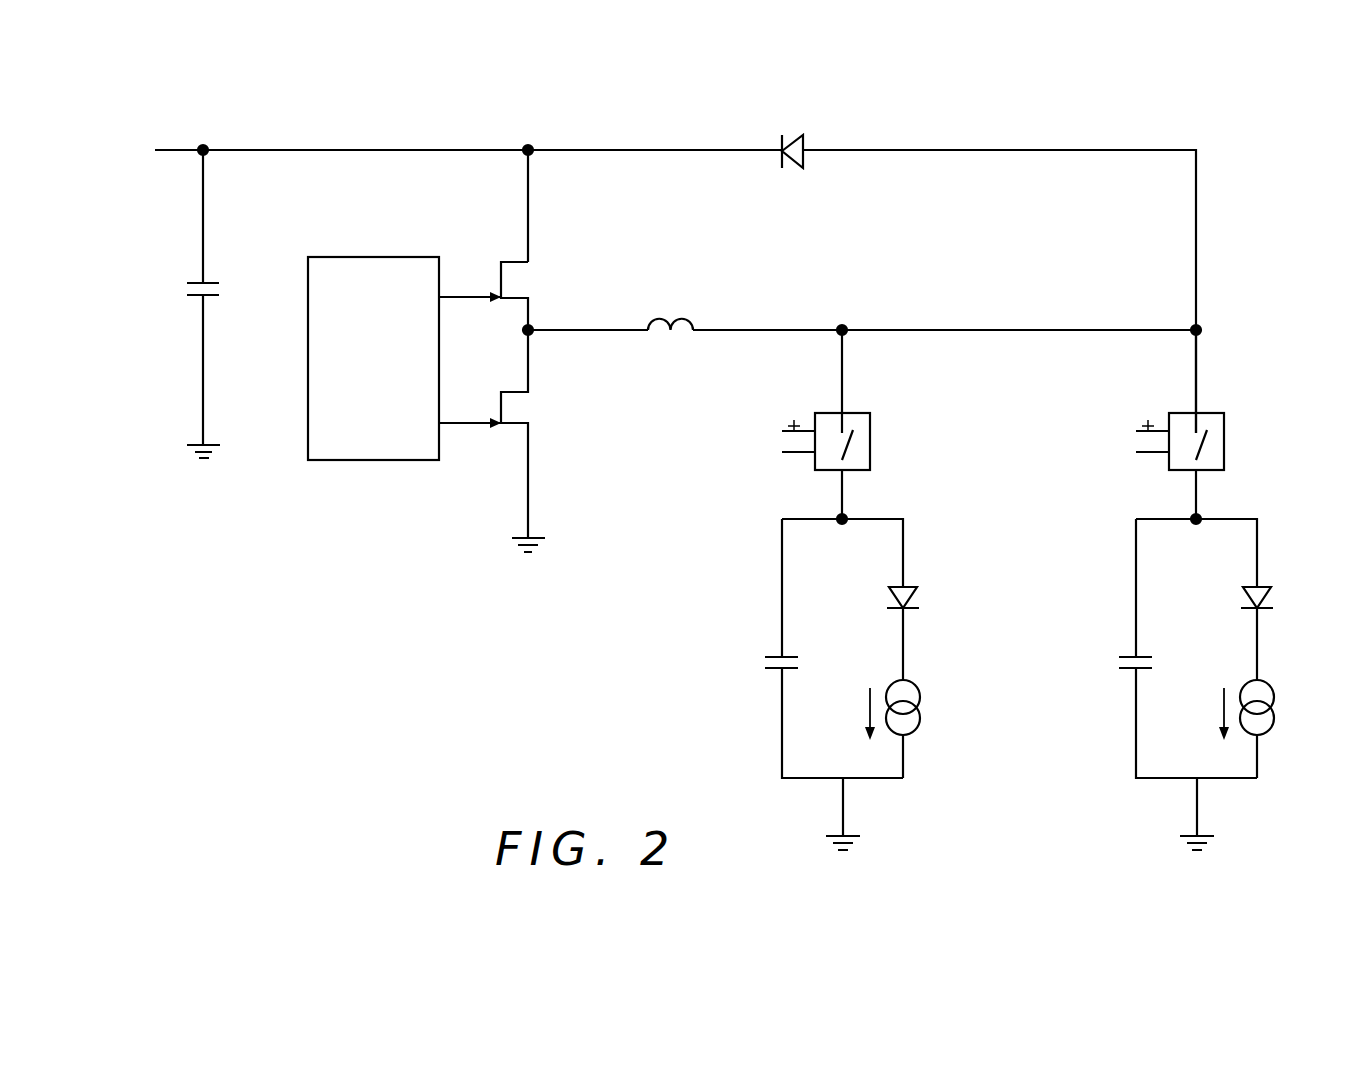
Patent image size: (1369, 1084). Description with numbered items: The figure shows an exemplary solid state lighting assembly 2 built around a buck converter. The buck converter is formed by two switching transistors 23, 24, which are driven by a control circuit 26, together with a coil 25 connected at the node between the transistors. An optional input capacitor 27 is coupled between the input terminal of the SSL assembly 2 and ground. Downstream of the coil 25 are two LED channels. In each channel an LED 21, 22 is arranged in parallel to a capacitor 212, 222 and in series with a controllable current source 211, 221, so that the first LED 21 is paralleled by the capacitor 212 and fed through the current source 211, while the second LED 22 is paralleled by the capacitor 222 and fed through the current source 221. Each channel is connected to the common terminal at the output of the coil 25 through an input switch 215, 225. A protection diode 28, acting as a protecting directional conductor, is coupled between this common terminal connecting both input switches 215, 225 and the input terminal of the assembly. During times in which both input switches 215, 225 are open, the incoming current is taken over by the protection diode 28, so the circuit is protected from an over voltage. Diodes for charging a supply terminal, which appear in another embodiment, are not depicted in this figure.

The solid state lighting assembly 2 is at (951, 68).
The LED 21 is at (930, 592).
The LED 22 is at (1243, 597).
The switching transistor 23 is at (523, 280).
The switching transistor 24 is at (521, 408).
The coil 25 is at (672, 315).
The control circuit 26 is at (383, 463).
The input capacitor 27 is at (185, 288).
The protection diode 28 is at (793, 135).
The controllable current source 211 is at (933, 713).
The capacitor 212 is at (758, 662).
The input switch 215 is at (887, 437).
The controllable current source 221 is at (1293, 729).
The capacitor 222 is at (1144, 684).
The input switch 225 is at (1231, 424).